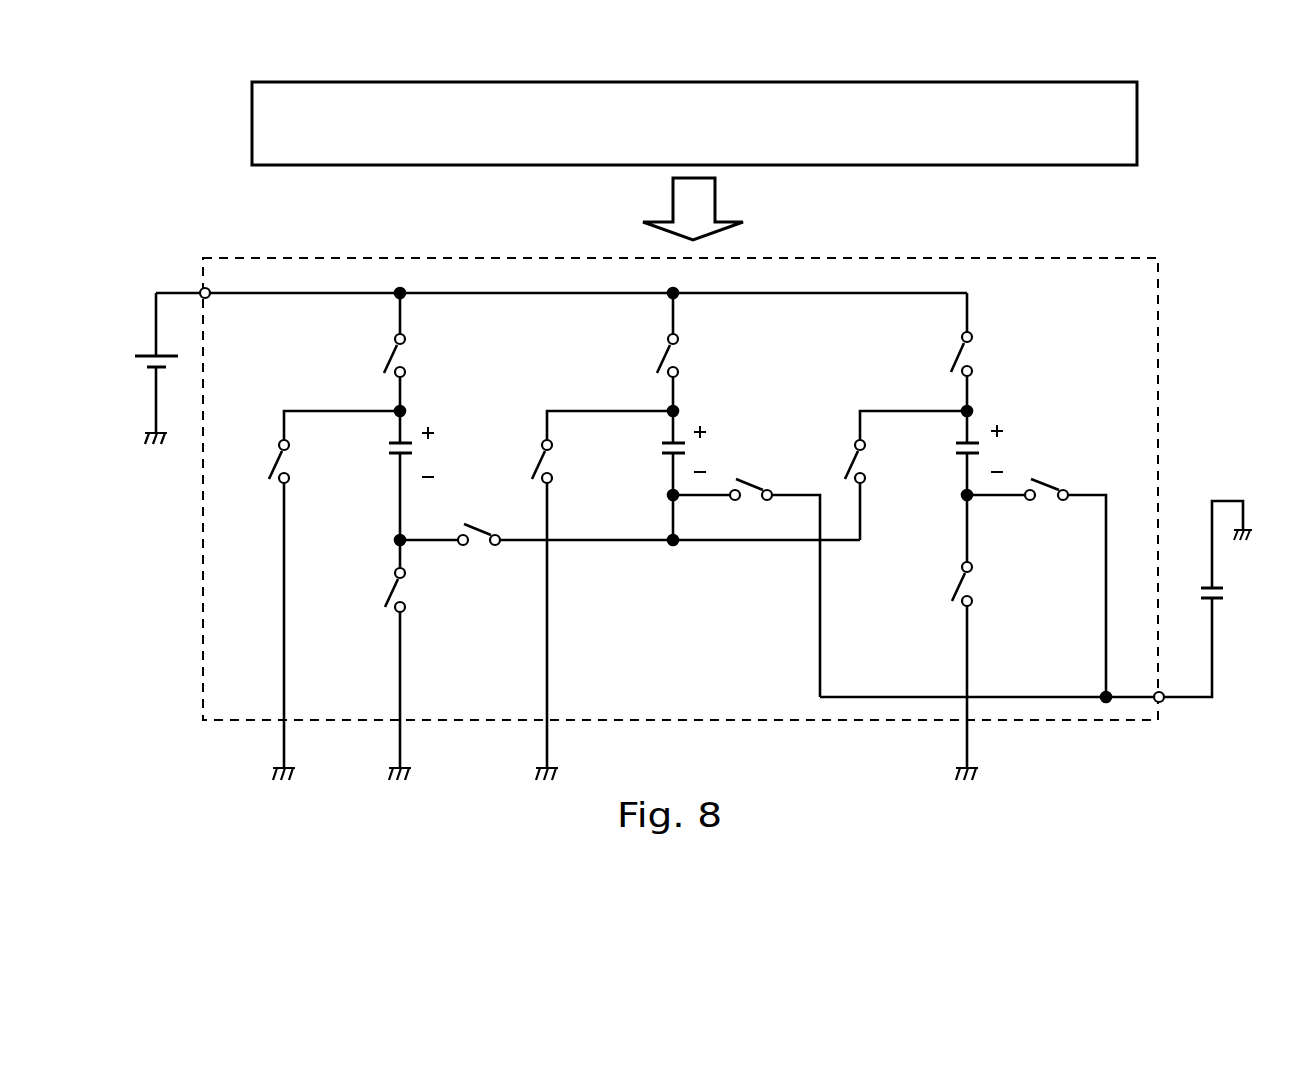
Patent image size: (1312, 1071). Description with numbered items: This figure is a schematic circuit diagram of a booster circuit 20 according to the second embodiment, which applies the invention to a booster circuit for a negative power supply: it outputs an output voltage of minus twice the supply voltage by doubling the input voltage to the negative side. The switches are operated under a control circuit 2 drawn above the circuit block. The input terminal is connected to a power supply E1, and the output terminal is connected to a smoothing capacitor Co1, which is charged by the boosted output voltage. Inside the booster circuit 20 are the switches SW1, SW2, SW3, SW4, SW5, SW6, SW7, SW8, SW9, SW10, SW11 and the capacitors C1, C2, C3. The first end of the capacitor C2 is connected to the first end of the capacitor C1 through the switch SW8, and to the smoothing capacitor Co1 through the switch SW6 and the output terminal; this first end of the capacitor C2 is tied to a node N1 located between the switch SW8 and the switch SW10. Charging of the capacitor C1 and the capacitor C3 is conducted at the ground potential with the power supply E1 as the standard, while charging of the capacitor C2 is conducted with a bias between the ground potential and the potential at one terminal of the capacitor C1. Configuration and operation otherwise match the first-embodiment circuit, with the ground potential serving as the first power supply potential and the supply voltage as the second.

The control circuit 2 is at (573, 82).
The booster circuit 20 is at (1006, 258).
The switch SW1 is at (423, 654).
The switch SW2 is at (427, 352).
The switch SW3 is at (992, 665).
The switch SW4 is at (991, 352).
The switch SW5 is at (602, 589).
The switch SW6 is at (746, 588).
The switch SW7 is at (334, 589).
The switch SW8 is at (458, 553).
The switch SW9 is at (701, 352).
The switch SW10 is at (906, 475).
The switch SW11 is at (1036, 588).
The capacitor C1 is at (397, 475).
The capacitor C2 is at (668, 475).
The capacitor C3 is at (962, 486).
The smoothing capacitor Co1 is at (1227, 590).
The power supply E1 is at (149, 363).
The node N1 is at (680, 563).